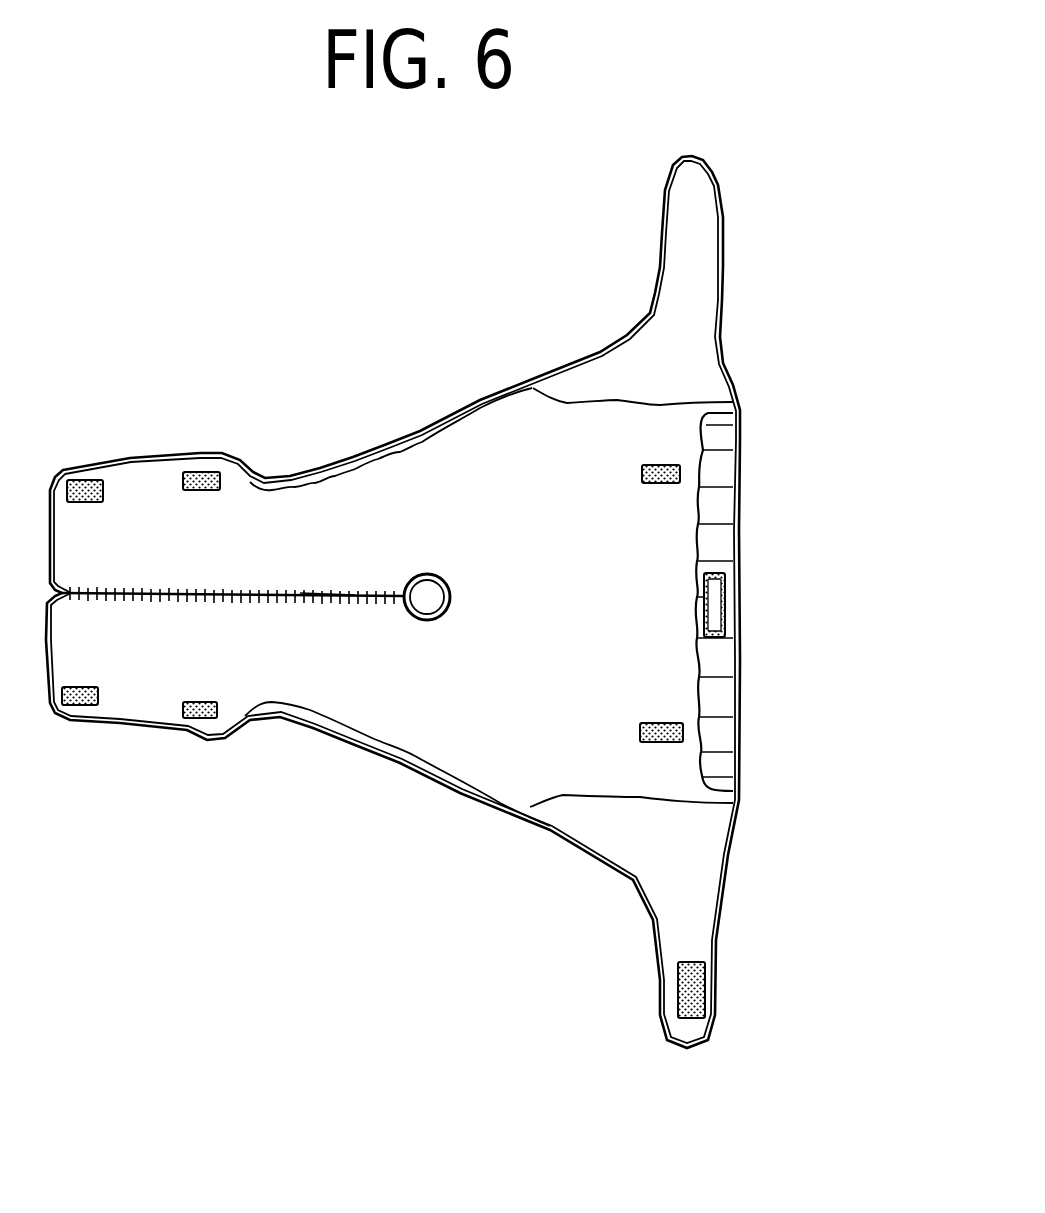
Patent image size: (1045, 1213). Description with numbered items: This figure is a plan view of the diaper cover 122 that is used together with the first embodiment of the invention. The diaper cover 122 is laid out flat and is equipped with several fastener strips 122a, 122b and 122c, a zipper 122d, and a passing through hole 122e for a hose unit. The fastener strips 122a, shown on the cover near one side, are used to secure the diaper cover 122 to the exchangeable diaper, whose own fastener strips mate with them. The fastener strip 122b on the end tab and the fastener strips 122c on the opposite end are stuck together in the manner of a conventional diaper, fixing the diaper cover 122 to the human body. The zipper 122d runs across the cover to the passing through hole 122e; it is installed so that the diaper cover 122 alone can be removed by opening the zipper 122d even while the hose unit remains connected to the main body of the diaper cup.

The diaper cover 122 is at (472, 800).
The fastener strips 122a is at (680, 478).
The fastener strip 122b is at (697, 985).
The fastener strips 122c is at (203, 478).
The zipper 122d is at (327, 605).
The passing through hole 122e is at (430, 575).